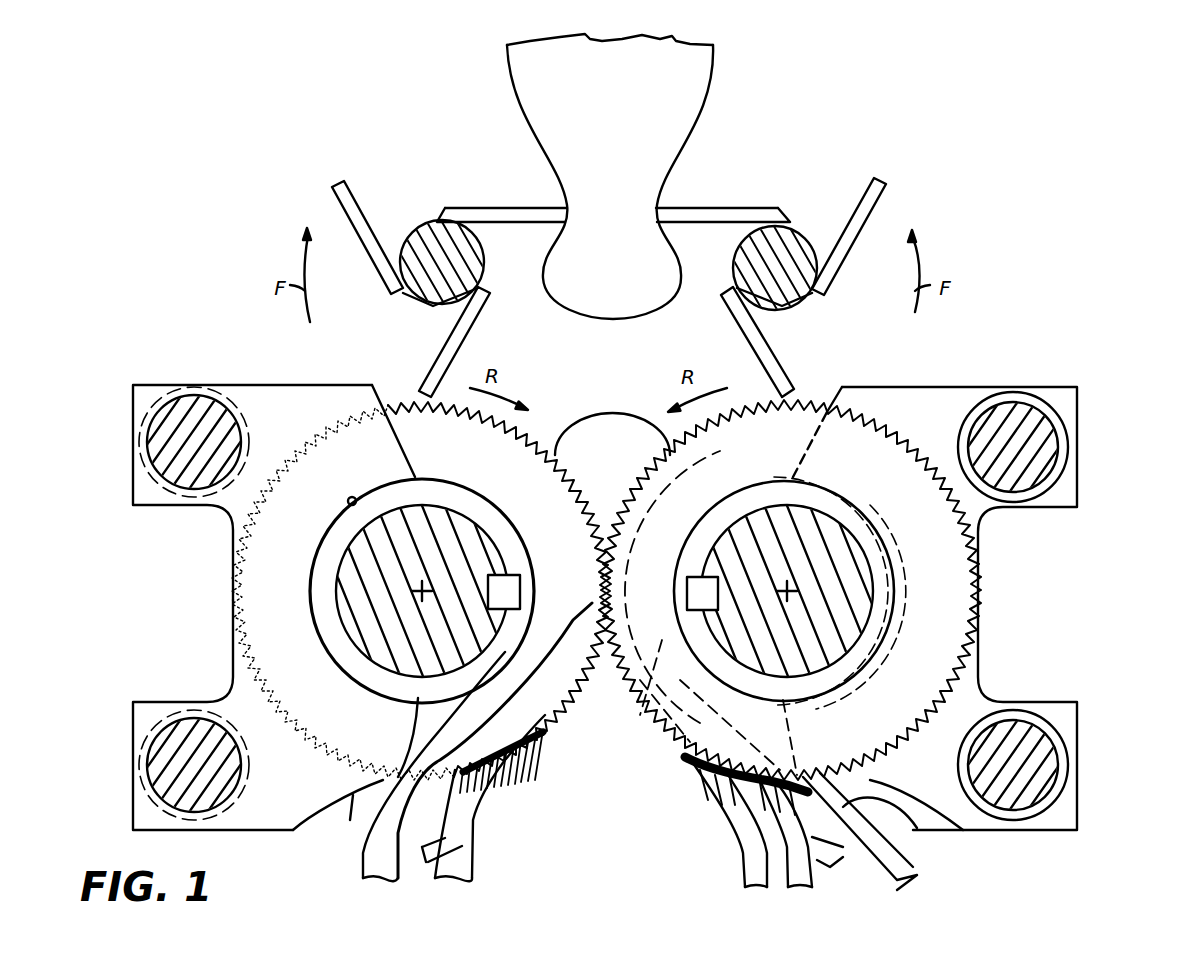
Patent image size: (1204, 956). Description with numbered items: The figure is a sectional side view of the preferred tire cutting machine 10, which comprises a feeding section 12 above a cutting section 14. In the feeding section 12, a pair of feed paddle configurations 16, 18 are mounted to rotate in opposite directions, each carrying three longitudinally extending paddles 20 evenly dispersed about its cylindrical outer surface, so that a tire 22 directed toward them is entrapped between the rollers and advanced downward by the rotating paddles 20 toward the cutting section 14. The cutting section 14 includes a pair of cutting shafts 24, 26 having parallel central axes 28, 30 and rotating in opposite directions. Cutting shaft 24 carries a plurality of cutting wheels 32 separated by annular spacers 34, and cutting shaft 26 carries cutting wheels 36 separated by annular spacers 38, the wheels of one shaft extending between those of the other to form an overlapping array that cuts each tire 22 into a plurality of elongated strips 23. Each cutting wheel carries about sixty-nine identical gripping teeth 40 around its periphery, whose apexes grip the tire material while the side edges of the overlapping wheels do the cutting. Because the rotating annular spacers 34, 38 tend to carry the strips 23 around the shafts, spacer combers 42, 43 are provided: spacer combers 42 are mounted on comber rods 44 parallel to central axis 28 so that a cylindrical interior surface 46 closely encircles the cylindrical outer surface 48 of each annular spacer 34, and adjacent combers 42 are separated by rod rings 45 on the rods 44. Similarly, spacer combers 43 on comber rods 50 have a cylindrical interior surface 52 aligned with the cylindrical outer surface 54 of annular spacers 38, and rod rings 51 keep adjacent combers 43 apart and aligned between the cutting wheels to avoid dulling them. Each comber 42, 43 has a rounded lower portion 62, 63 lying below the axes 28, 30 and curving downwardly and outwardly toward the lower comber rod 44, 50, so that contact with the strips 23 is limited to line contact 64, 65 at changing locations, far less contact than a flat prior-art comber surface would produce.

The tire cutting machine 10 is at (941, 130).
The feeding section 12 is at (953, 226).
The cutting section 14 is at (1058, 584).
The feed paddle configuration 16 is at (428, 302).
The feed paddle configuration 18 is at (785, 306).
The paddle 20 is at (494, 207).
The tire 22 is at (714, 63).
The elongated strip 23 is at (400, 830).
The cutting shaft 24 is at (343, 544).
The cutting shaft 26 is at (868, 566).
The central axis 28 is at (426, 588).
The central axis 30 is at (790, 590).
The cutting wheel 32 is at (415, 441).
The annular spacer 34 is at (516, 624).
The cutting wheel 36 is at (852, 442).
The annular spacer 38 is at (662, 738).
The gripping teeth 40 is at (548, 729).
The spacer comber 42 is at (243, 687).
The spacer comber 43 is at (968, 698).
The comber rod 44 is at (170, 423).
The rod ring 45 is at (250, 425).
The cylindrical interior surface 46 is at (348, 500).
The cylindrical outer surface 48 is at (318, 640).
The comber rod 50 is at (1046, 449).
The rod ring 51 is at (1050, 393).
The cylindrical interior surface 52 is at (902, 606).
The cylindrical outer surface 54 is at (878, 650).
The rounded lower portion 62 is at (298, 832).
The rounded lower portion 63 is at (960, 832).
The line contact 64 is at (350, 820).
The line contact 65 is at (915, 832).